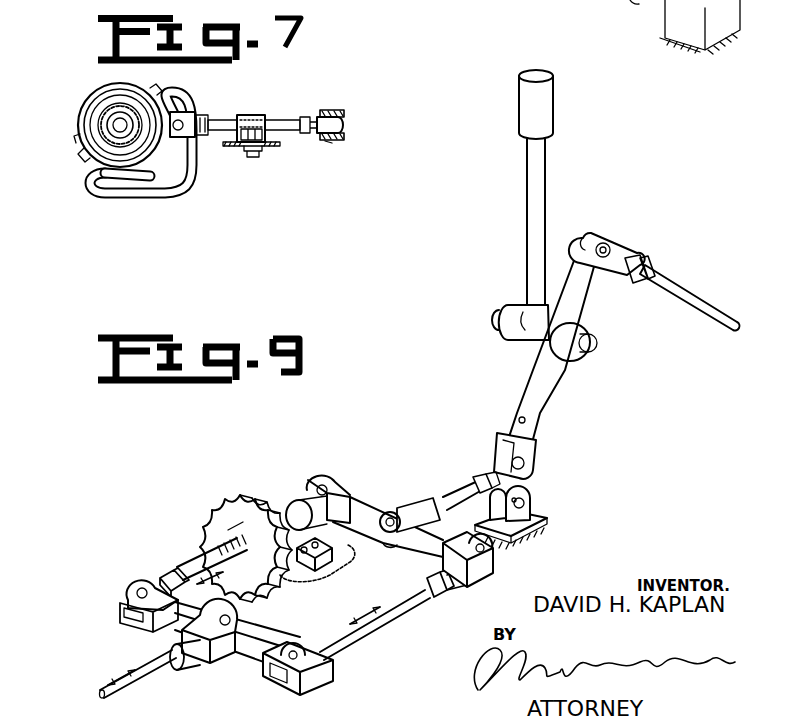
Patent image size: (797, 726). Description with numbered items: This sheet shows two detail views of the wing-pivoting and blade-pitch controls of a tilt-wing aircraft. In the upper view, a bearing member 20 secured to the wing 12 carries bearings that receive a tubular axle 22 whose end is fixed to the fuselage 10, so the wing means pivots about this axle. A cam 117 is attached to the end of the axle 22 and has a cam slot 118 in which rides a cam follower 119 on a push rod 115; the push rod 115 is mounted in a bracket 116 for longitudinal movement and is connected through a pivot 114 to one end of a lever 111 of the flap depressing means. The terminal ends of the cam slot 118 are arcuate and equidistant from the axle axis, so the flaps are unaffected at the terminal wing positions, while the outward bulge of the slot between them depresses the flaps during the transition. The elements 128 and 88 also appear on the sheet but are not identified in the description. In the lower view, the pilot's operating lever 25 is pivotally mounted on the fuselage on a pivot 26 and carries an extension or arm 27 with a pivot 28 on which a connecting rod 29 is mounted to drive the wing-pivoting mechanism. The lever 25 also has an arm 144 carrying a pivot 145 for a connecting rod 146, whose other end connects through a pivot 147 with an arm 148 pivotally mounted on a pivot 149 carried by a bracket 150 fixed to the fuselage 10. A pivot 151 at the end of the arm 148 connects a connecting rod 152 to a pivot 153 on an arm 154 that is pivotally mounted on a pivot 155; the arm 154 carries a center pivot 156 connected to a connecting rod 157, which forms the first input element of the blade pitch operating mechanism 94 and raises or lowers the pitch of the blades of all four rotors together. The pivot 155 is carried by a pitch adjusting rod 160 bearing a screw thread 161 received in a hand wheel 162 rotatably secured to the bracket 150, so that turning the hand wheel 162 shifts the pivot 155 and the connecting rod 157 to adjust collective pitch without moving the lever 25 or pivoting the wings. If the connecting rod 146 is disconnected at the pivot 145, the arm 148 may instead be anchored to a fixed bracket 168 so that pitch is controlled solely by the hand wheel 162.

In FIG. 7, the bearing member 20 is at (80, 118).
In FIG. 7, the axle 22 is at (100, 129).
In FIG. 7, the dial hub 128 is at (112, 120).
In FIG. 7, the cam 117 is at (112, 197).
In FIG. 7, the cam slot 118 is at (160, 192).
In FIG. 7, the cam follower 119 is at (186, 120).
In FIG. 7, the bracket 116 is at (248, 115).
In FIG. 7, the wing 12 is at (253, 158).
In FIG. 7, the push rod 115 is at (296, 120).
In FIG. 7, the lever 111 is at (346, 138).
In FIG. 7, the pivot 114 is at (332, 143).
In FIG. 9, the fuselage 10 is at (670, 33).
In FIG. 9, the pulley 88 is at (656, 0).
In FIG. 9, the operating lever 25 is at (546, 171).
In FIG. 9, the pivot 26 is at (596, 345).
In FIG. 9, the extension or arm 27 is at (580, 302).
In FIG. 9, the pivot 28 is at (610, 246).
In FIG. 9, the connecting rod 29 is at (696, 298).
In FIG. 9, the extension or arm 144 is at (548, 396).
In FIG. 9, the pivot 145 is at (526, 462).
In FIG. 9, the connecting rod 146 is at (456, 478).
In FIG. 9, the pivot 147 is at (394, 512).
In FIG. 9, the arm 148 is at (364, 493).
In FIG. 9, the pivot 149 is at (323, 484).
In FIG. 9, the bracket 150 is at (290, 505).
In FIG. 9, the hand wheel 162 is at (248, 490).
In FIG. 9, the screw thread 161 is at (220, 535).
In FIG. 9, the pitch adjusting rod 160 is at (168, 572).
In FIG. 9, the blade pitch operating or control mechanism 94 is at (330, 576).
In FIG. 9, the pivot 155 is at (134, 592).
In FIG. 9, the center pivot 156 is at (240, 615).
In FIG. 9, the connecting rod 157 is at (140, 655).
In FIG. 9, the arm 154 is at (256, 656).
In FIG. 9, the pivot 153 is at (320, 676).
In FIG. 9, the connecting rod 152 is at (395, 614).
In FIG. 9, the pivot 151 is at (495, 560).
In FIG. 9, the fixed bracket 168 is at (533, 505).